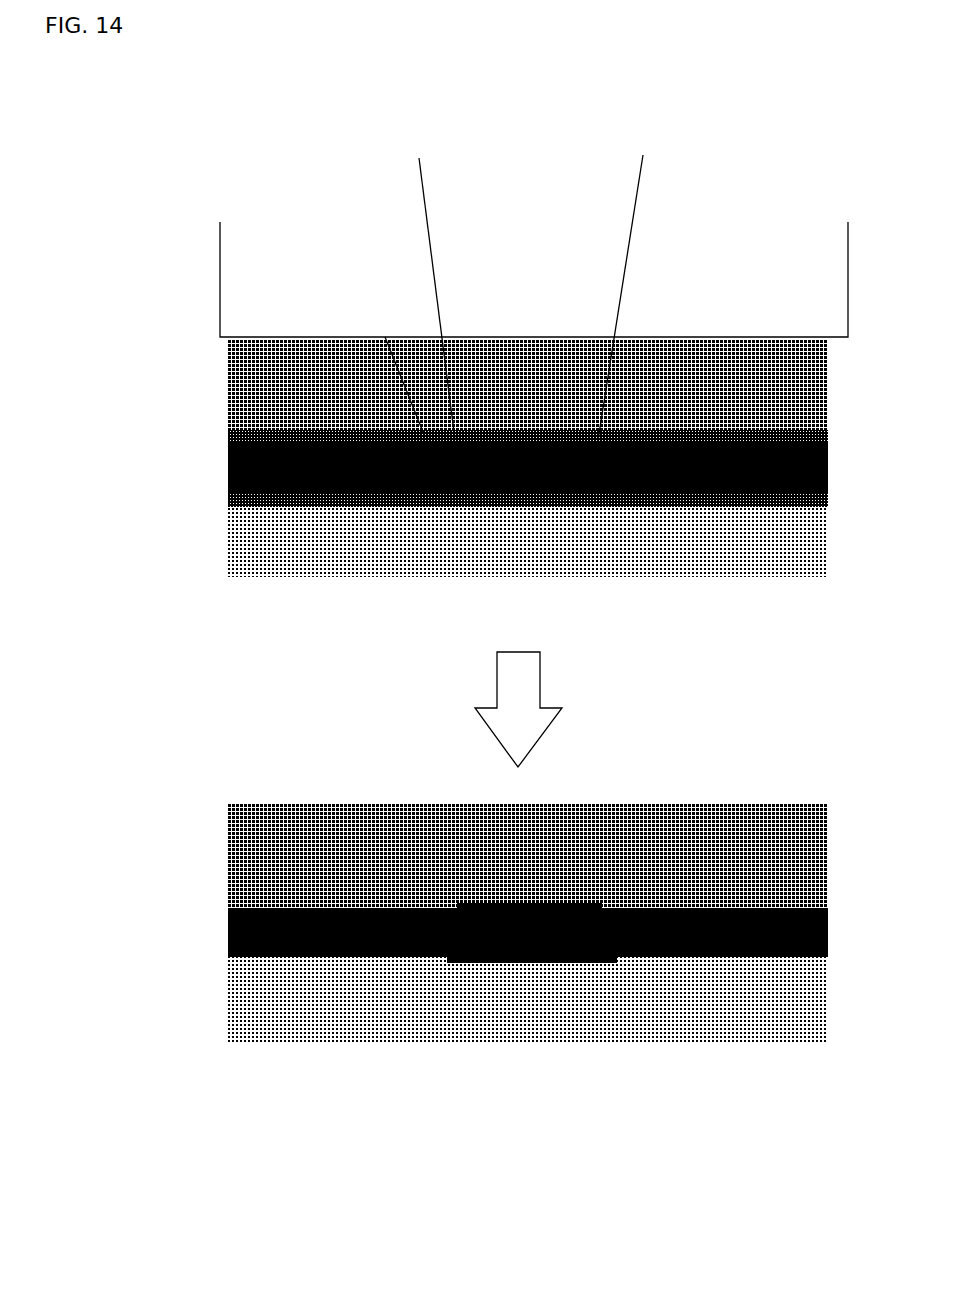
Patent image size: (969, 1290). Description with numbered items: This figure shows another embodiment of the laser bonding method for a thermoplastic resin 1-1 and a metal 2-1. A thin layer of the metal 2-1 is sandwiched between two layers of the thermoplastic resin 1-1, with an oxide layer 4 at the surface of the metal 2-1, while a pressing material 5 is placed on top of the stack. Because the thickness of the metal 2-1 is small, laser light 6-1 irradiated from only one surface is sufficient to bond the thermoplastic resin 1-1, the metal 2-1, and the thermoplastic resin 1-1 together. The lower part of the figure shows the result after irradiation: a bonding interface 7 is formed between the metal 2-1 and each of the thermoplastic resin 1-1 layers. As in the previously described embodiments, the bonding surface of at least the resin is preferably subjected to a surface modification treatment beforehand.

The thermoplastic resin 1-1 is at (232, 390).
The metal 2-1 is at (228, 472).
The oxide layer 4 is at (385, 337).
The pressing material 5 is at (220, 265).
The laser light 6-1 is at (645, 165).
The bonding interface 7 is at (582, 907).